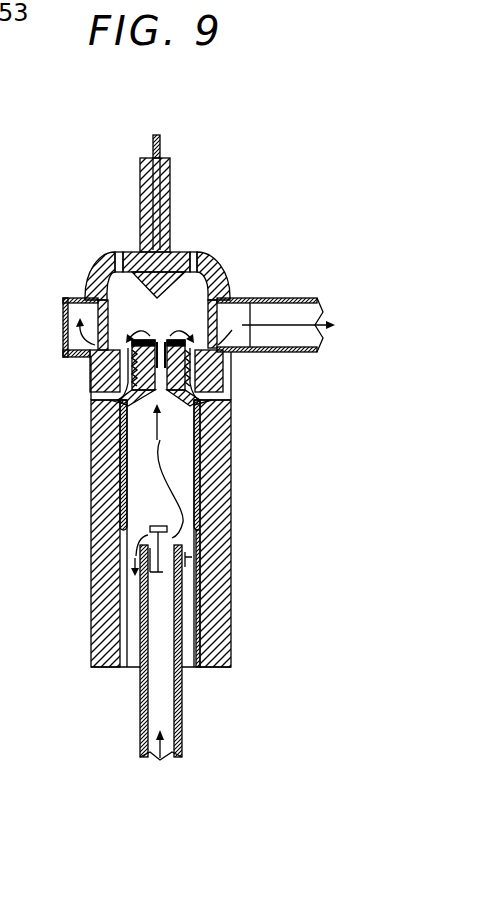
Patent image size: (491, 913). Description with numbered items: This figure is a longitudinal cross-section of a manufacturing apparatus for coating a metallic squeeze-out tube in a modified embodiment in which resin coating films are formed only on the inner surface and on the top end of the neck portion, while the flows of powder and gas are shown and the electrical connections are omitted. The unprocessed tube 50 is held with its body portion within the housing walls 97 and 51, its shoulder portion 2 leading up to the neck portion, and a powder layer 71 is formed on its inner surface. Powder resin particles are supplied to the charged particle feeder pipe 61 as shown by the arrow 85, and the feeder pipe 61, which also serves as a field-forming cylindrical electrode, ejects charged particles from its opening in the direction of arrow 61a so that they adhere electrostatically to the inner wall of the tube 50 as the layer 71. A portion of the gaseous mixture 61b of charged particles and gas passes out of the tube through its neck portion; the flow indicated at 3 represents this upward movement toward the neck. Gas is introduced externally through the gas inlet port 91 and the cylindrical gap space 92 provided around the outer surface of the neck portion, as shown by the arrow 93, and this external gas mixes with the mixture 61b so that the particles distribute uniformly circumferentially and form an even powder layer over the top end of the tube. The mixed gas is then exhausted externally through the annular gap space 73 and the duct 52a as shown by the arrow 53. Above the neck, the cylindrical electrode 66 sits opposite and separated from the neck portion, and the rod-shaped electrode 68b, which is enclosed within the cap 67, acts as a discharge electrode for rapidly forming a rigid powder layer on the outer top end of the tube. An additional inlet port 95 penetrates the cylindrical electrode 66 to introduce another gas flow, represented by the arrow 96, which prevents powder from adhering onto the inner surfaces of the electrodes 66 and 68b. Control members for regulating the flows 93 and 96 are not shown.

The electrode 68b is at (172, 282).
The dome cap 67 is at (96, 264).
The cylindrical electrode 66 is at (204, 288).
The gas flow 96 is at (118, 247).
The additional inlet port 95 is at (198, 252).
The mixture of charged particles and gas 61b is at (173, 325).
The duct 52a is at (242, 296).
The annular gap space 73 is at (100, 347).
The cylindrical gap space 92 is at (112, 378).
The suction flow 53 is at (322, 332).
The left housing wall 97 is at (120, 617).
The right housing wall 51 is at (217, 633).
The powder layer 71 is at (124, 494).
The unprocessed tube 50 is at (203, 585).
The gas flow 93 is at (84, 405).
The gas inlet port 91 is at (90, 400).
The fluid flow 3 is at (166, 422).
The shoulder portion 2 is at (171, 485).
The flow direction of charged particles 61a is at (135, 552).
The charged particle feeder pipe 61 is at (183, 714).
The flow of powder resin particles 85 is at (160, 760).